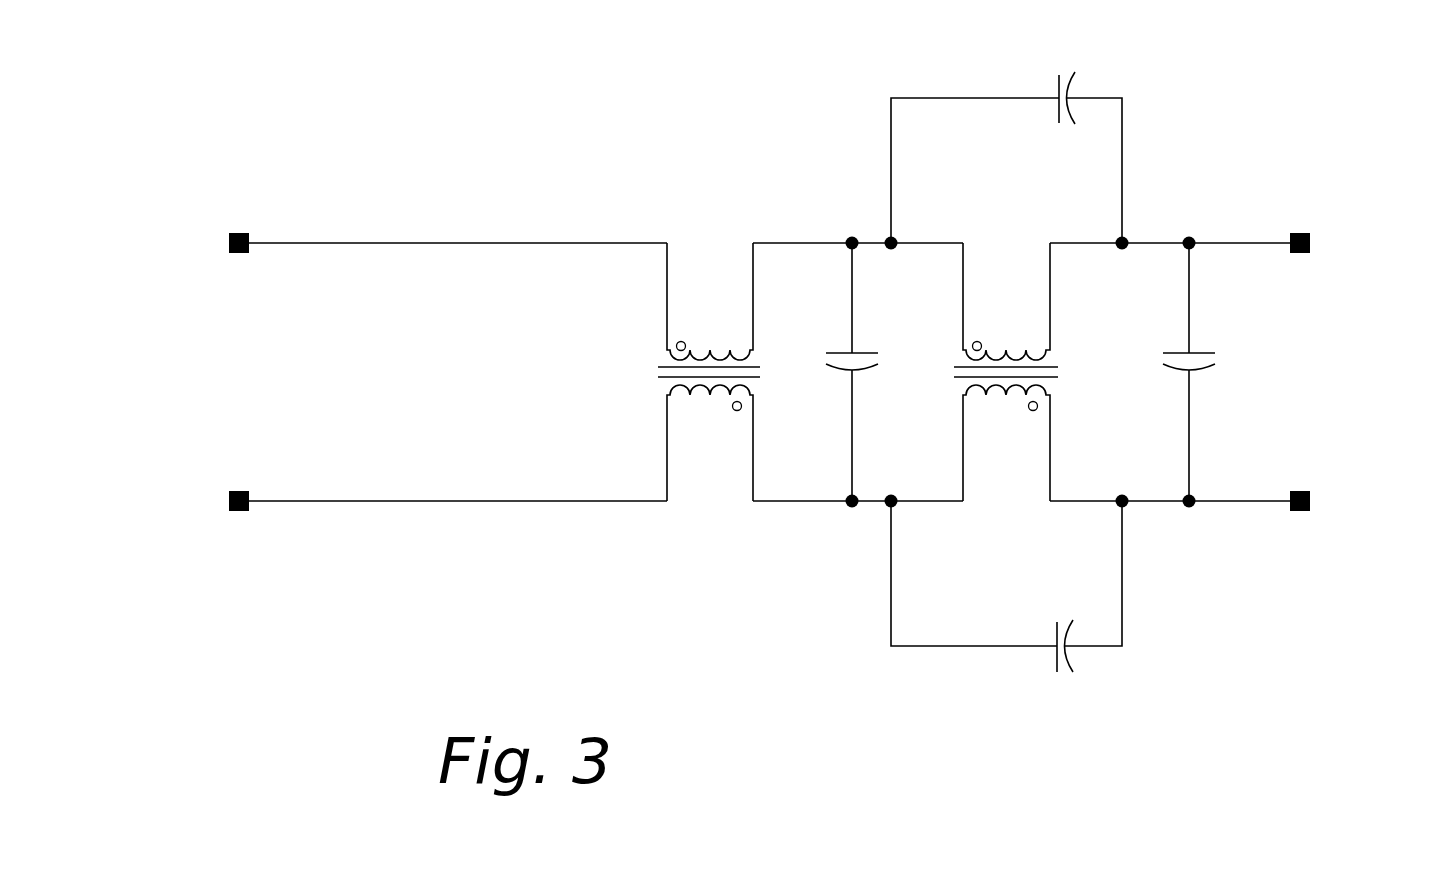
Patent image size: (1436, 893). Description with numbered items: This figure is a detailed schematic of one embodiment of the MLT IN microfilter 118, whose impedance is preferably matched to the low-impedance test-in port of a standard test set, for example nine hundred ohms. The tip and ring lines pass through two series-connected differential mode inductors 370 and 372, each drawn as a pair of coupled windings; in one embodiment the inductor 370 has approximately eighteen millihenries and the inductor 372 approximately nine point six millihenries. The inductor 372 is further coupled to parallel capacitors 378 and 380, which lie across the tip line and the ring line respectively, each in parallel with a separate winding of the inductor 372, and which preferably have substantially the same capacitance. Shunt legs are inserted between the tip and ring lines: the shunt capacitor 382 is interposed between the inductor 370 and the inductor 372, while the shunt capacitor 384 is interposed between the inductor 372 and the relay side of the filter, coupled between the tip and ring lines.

The MLT IN microfilter 118 is at (1302, 93).
The differential mode inductor 370 is at (648, 368).
The differential mode inductor 372 is at (1065, 368).
The parallel capacitor 378 is at (1053, 110).
The parallel capacitor 380 is at (1055, 660).
The shunt capacitor 382 is at (864, 352).
The shunt capacitor 384 is at (1204, 352).